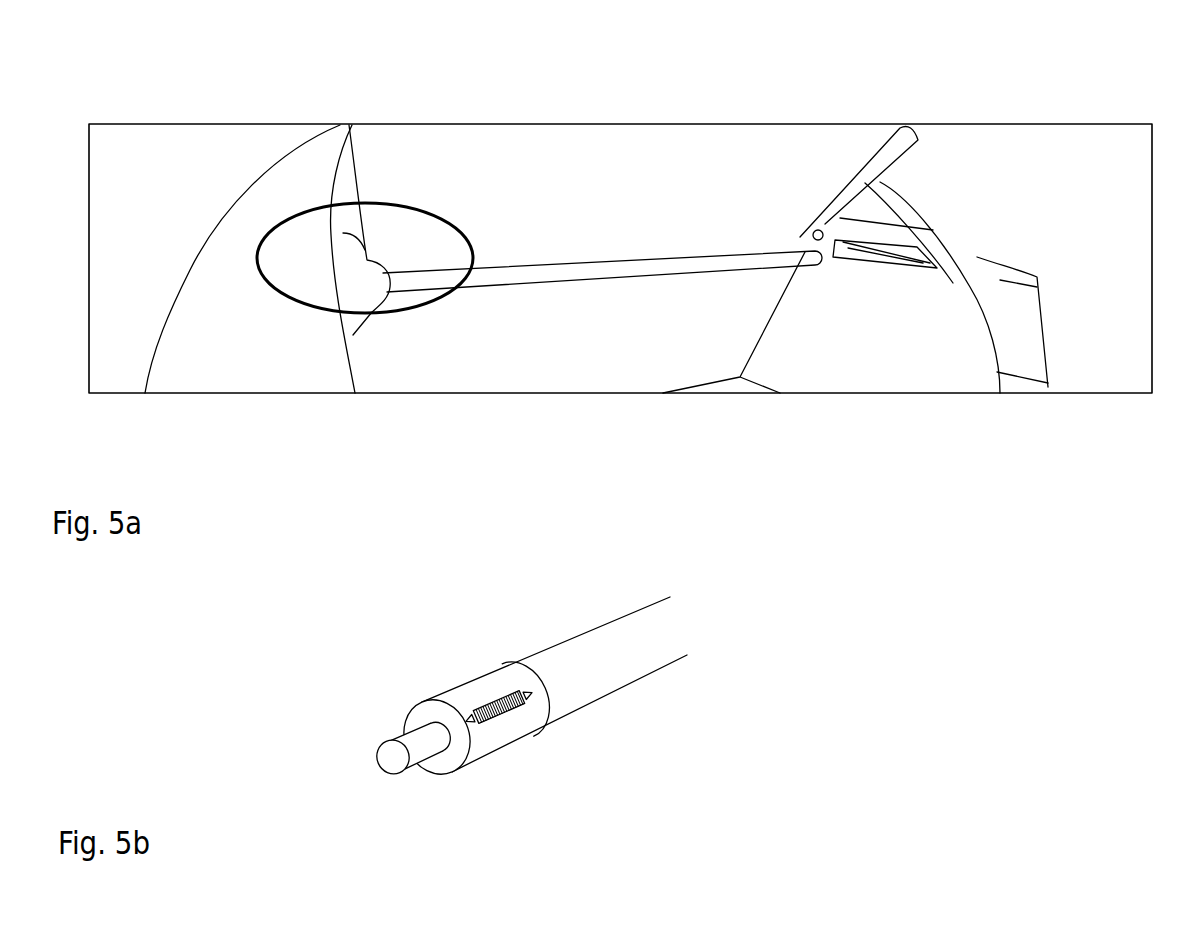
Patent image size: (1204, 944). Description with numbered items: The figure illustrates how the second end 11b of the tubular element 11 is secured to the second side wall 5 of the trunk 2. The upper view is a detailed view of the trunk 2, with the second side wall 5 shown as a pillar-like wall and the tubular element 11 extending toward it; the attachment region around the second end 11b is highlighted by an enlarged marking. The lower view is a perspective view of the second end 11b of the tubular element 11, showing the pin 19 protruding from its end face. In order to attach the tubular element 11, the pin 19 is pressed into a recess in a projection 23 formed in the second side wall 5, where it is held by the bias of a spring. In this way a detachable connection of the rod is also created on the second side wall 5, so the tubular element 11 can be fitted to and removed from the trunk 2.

In FIG. 5A, the trunk 2 is at (686, 368).
In FIG. 5A, the second side wall 5 is at (353, 363).
In FIG. 5B, the tubular element 11 is at (620, 645).
In FIG. 5A, the second end 11b is at (398, 255).
In FIG. 5B, the second end 11b is at (461, 640).
In FIG. 5B, the pin 19 is at (420, 750).
In FIG. 5A, the projection 23 is at (382, 288).